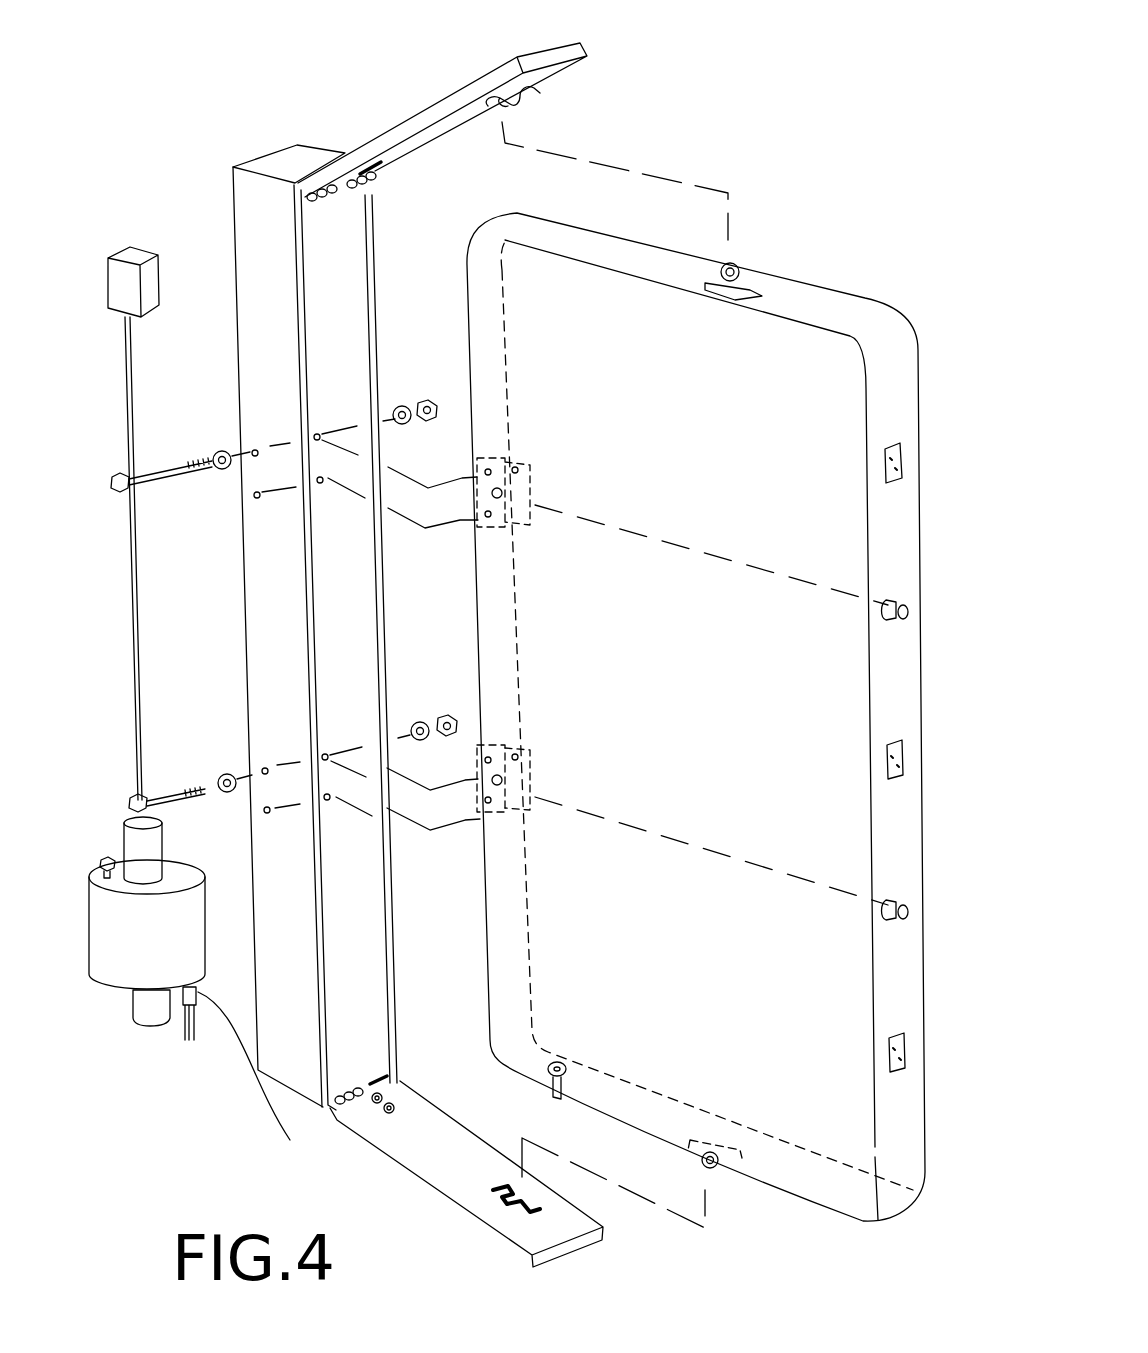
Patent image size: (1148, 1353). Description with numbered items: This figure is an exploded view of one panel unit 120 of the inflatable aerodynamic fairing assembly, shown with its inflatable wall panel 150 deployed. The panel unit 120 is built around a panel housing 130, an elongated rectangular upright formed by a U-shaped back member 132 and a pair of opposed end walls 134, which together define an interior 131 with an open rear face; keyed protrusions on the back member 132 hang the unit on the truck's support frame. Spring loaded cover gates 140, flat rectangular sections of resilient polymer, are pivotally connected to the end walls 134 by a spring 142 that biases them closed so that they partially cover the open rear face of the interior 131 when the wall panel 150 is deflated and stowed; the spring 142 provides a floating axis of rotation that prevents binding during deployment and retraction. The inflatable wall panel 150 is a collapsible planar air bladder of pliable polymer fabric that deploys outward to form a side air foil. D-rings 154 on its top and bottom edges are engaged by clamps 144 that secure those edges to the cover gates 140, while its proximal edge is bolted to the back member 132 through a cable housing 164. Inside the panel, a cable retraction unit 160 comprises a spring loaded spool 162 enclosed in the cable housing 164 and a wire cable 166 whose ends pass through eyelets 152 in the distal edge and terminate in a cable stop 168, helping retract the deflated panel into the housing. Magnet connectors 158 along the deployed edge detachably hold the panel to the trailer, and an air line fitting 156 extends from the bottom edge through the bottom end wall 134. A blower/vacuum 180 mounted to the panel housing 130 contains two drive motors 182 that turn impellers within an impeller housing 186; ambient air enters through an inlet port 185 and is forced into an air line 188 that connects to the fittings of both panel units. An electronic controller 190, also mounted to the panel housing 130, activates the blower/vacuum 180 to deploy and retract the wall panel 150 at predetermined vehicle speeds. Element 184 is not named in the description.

The panel unit 120 is at (745, 100).
The panel housing 130 is at (254, 142).
The interior 131 is at (366, 655).
The back member 132 is at (257, 277).
The end wall 134 is at (304, 164).
The cover gate 140 is at (423, 110).
The spring 142 is at (382, 1083).
The clamp 144 is at (520, 102).
The inflatable wall panel 150 is at (813, 296).
The eyelet 152 is at (893, 600).
The D-ring 154 is at (738, 262).
The air line fitting 156 is at (552, 1080).
The magnet connector 158 is at (885, 460).
The cable retraction unit 160 is at (524, 462).
The spring loaded spool 162 is at (525, 488).
The cable housing 164 is at (522, 511).
The wire cable 166 is at (690, 540).
The cable stop 168 is at (897, 627).
The blower/vacuum 180 is at (116, 958).
The drive motor 182 is at (160, 840).
The motor housing 184 is at (183, 942).
The inlet port 185 is at (106, 856).
The impeller housing 186 is at (274, 1079).
The air line 188 is at (192, 1030).
The electronic controller 190 is at (141, 232).